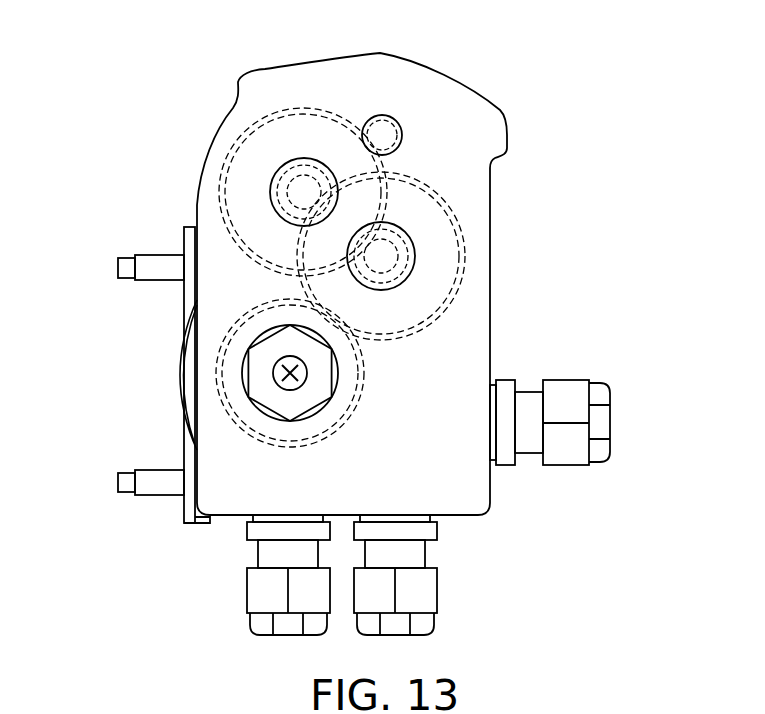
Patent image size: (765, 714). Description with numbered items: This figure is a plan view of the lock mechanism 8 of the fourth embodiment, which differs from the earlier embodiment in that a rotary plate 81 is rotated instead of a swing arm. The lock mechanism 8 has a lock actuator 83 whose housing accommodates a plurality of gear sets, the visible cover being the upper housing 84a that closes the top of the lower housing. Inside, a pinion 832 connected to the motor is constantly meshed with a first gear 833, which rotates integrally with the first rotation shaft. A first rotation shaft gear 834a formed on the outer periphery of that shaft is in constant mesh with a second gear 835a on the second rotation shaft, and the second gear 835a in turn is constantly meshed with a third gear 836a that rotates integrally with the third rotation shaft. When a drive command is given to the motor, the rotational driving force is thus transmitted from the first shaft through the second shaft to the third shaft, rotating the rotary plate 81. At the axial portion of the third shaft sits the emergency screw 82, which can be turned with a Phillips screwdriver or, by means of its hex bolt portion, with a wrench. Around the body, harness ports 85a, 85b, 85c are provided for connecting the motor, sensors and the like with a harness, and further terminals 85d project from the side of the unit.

The lock mechanism 8 is at (455, 76).
The rotary plate 81 is at (172, 352).
The emergency screw 82 is at (267, 380).
The lock actuator 83 is at (303, 58).
The pinion 832 is at (385, 115).
The first gear 833 is at (320, 110).
The first rotation shaft gear 834a is at (290, 177).
The second gear 835a is at (443, 193).
The third gear 836a is at (246, 318).
The upper housing 84a is at (255, 490).
The harness port 85a is at (575, 380).
The harness port 85b is at (437, 593).
The harness port 85c is at (247, 610).
The terminal 85d is at (143, 256).